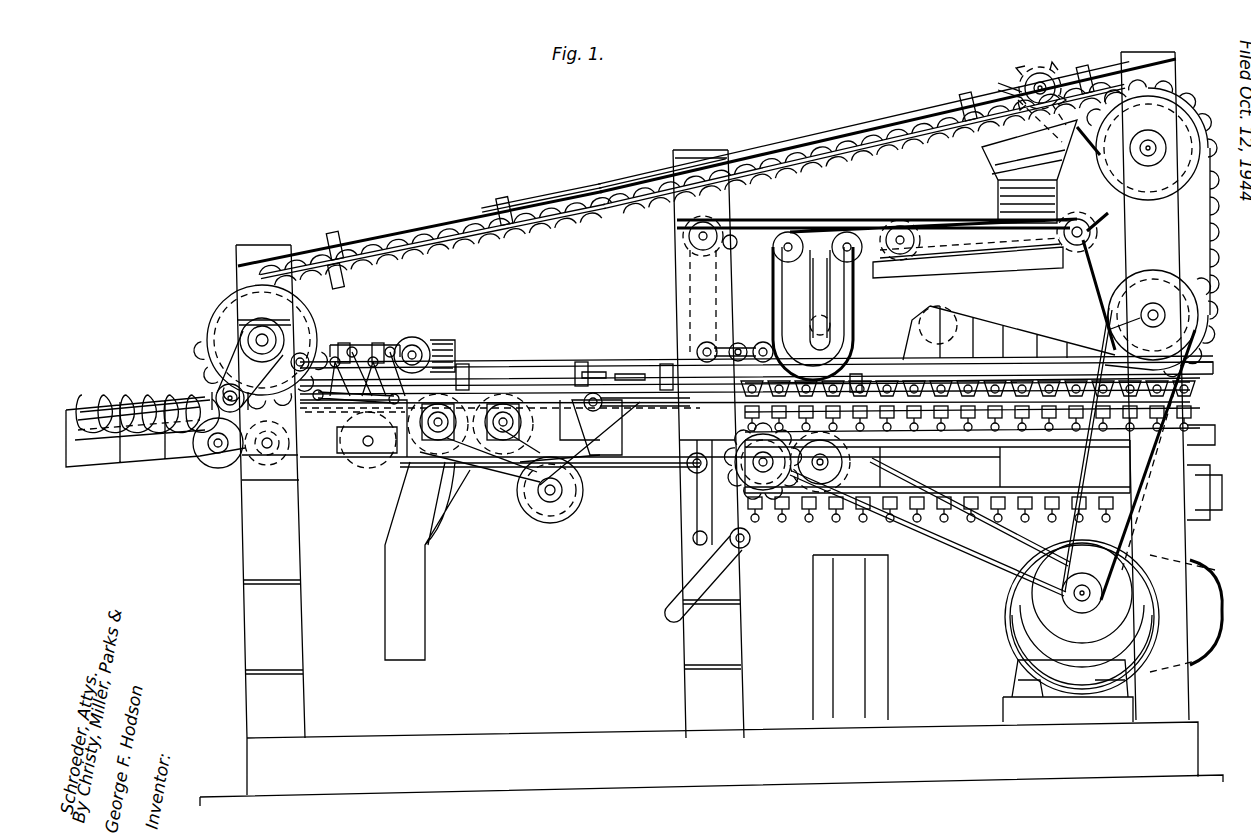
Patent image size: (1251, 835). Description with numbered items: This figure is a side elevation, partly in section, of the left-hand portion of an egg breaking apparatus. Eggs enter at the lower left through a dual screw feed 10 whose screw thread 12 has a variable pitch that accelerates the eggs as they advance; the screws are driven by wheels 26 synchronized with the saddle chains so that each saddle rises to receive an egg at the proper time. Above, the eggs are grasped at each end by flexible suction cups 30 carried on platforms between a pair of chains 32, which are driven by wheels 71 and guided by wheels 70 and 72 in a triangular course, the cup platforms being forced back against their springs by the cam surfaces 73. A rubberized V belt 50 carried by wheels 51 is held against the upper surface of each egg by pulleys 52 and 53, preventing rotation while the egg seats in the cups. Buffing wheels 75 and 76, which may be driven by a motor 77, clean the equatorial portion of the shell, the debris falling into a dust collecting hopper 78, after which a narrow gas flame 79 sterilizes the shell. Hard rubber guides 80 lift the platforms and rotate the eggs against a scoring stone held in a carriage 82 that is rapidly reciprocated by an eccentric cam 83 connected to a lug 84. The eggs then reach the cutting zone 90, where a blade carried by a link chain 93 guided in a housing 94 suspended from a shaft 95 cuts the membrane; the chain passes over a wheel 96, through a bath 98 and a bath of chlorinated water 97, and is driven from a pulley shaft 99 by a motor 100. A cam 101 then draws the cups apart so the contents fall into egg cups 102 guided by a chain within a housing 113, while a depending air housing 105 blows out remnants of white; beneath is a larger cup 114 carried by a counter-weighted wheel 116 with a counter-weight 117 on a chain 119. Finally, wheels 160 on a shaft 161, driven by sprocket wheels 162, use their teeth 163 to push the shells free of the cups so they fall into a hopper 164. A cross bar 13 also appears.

The dual screw feed 10 is at (118, 400).
The screw thread 12 is at (160, 398).
The cross bar 13 is at (640, 396).
The wheels 26 is at (222, 388).
The flexible suction cup 30 is at (590, 210).
The chains 32 is at (208, 333).
The V belt 50 is at (372, 350).
The wheels 51 is at (422, 344).
The pulley 52 is at (344, 358).
The pulley 53 is at (378, 358).
The guide wheel 70 is at (228, 318).
The drive wheel 71 is at (1186, 350).
The guide wheel 72 is at (1182, 110).
The cam surfaces 73 is at (344, 284).
The buffing wheel 75 is at (466, 376).
The buffing wheel 76 is at (505, 400).
The motor 77 is at (540, 512).
The dust collecting hopper 78 is at (437, 505).
The gas flame 79 is at (548, 380).
The guides 80 is at (584, 405).
The carriage 82 is at (588, 425).
The eccentric cam 83 is at (594, 370).
The lug 84 is at (632, 373).
The cutting zone 90 is at (732, 342).
The link chain 93 is at (772, 222).
The housing 94 is at (756, 352).
The shaft 95 is at (740, 346).
The wheel 96 is at (801, 228).
The bath of chlorinated water 97 is at (962, 262).
The bath 98 is at (842, 309).
The pulley shaft 99 is at (1104, 300).
The motor 100 is at (1030, 600).
The cam 101 is at (541, 370).
The egg cups 102 is at (866, 380).
The air housing 105 is at (924, 320).
The housing 113 is at (856, 372).
The larger cup 114 is at (990, 498).
The counter-weighted wheel 116 is at (1062, 500).
The counter-weight 117 is at (878, 512).
The chain 119 is at (755, 505).
The wheels 160 is at (1028, 70).
The shaft 161 is at (1056, 74).
The sprocket wheels 162 is at (1058, 96).
The teeth 163 is at (1012, 85).
The hopper 164 is at (998, 172).